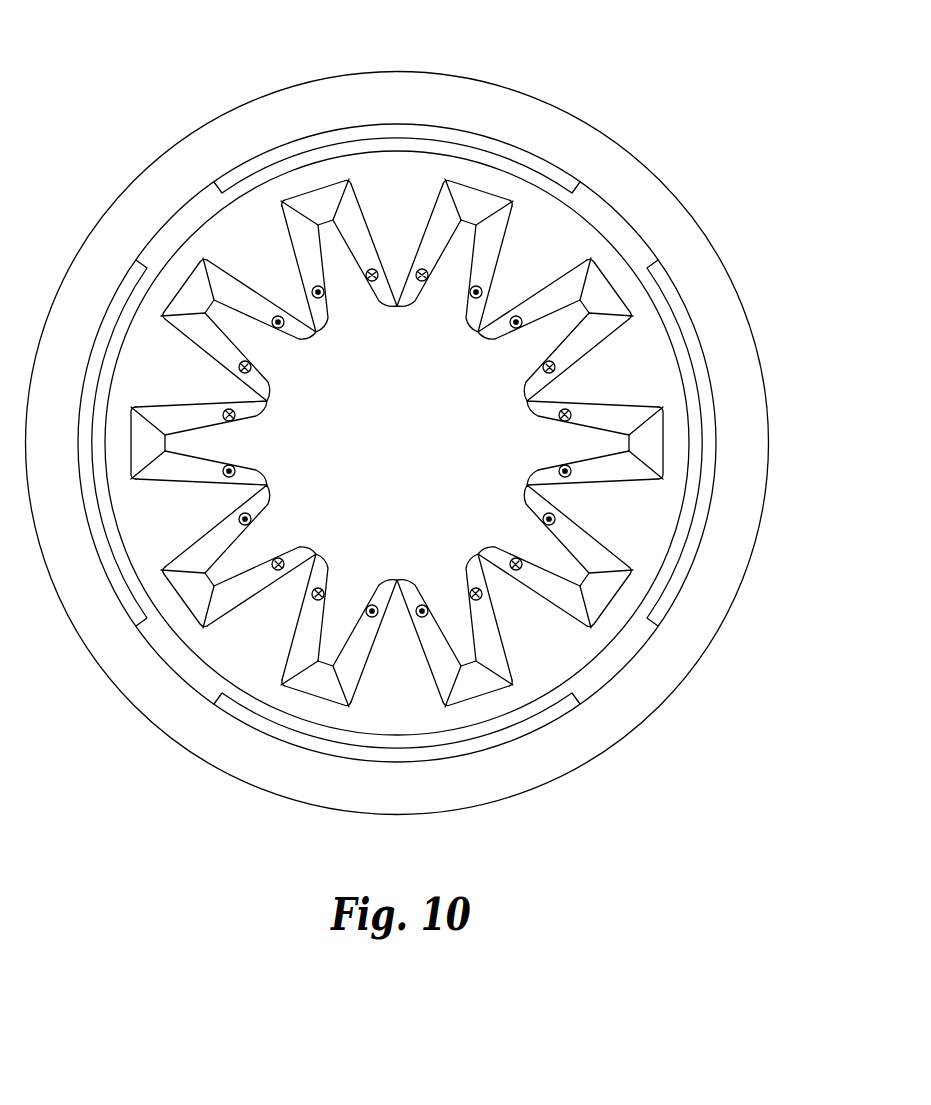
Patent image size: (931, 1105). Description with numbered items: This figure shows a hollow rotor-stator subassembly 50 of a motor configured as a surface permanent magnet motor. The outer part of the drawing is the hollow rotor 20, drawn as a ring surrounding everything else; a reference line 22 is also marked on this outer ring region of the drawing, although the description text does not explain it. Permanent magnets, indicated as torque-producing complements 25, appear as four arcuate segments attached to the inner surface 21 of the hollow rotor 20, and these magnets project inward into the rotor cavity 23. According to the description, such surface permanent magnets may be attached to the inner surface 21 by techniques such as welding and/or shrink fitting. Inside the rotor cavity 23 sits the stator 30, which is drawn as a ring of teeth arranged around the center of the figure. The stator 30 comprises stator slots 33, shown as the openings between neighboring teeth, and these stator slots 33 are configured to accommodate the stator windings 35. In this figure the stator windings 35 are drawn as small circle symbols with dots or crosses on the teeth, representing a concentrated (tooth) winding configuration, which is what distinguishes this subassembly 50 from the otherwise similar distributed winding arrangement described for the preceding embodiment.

The hollow rotor-stator subassembly 50 is at (88, 71).
The hollow rotor 20 is at (604, 162).
The inner surface 21 is at (637, 643).
The outer housing ring 22 is at (700, 236).
The rotor cavity 23 is at (645, 628).
The torque-producing complements 25 is at (472, 140).
The stator 30 is at (390, 428).
The stator slots 33 is at (630, 380).
The stator windings 35 is at (553, 460).